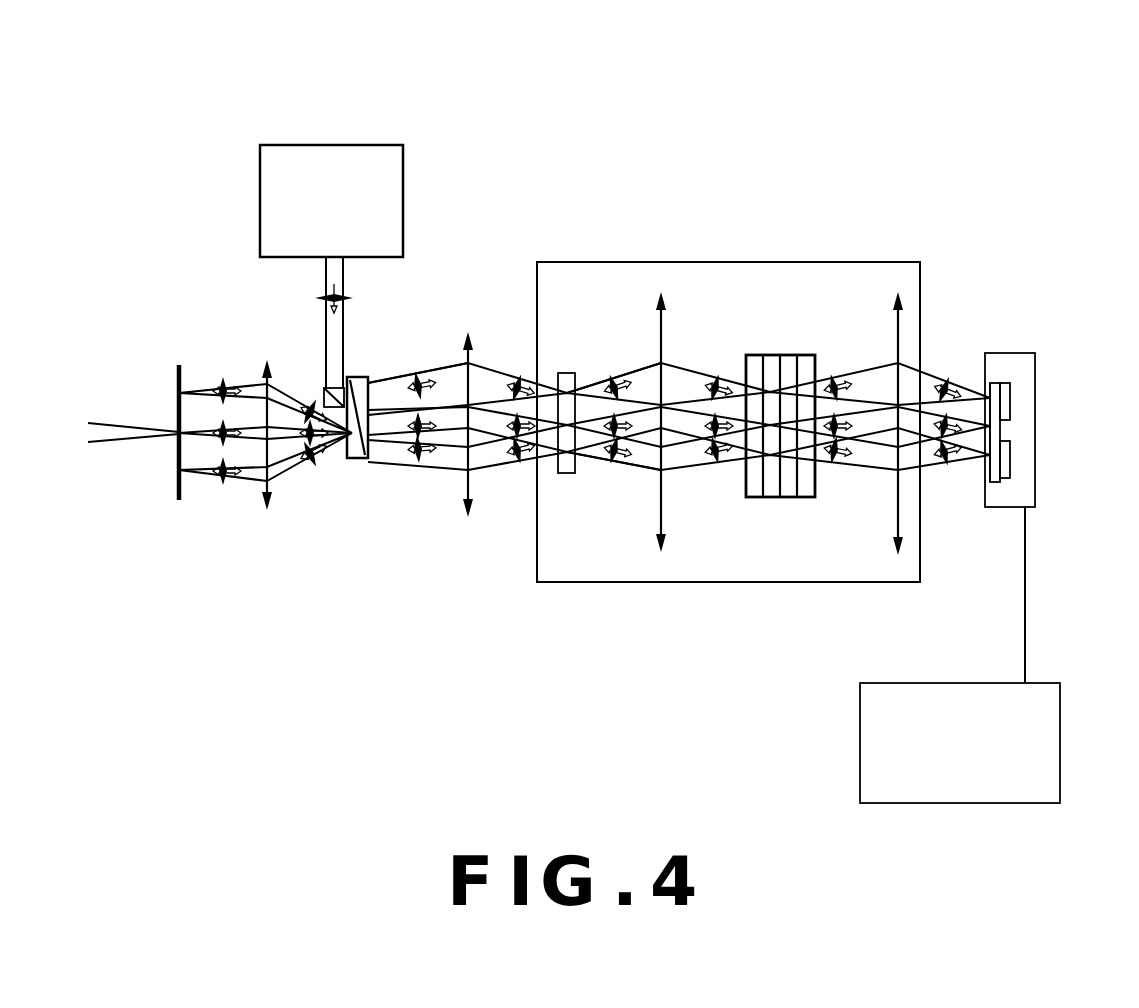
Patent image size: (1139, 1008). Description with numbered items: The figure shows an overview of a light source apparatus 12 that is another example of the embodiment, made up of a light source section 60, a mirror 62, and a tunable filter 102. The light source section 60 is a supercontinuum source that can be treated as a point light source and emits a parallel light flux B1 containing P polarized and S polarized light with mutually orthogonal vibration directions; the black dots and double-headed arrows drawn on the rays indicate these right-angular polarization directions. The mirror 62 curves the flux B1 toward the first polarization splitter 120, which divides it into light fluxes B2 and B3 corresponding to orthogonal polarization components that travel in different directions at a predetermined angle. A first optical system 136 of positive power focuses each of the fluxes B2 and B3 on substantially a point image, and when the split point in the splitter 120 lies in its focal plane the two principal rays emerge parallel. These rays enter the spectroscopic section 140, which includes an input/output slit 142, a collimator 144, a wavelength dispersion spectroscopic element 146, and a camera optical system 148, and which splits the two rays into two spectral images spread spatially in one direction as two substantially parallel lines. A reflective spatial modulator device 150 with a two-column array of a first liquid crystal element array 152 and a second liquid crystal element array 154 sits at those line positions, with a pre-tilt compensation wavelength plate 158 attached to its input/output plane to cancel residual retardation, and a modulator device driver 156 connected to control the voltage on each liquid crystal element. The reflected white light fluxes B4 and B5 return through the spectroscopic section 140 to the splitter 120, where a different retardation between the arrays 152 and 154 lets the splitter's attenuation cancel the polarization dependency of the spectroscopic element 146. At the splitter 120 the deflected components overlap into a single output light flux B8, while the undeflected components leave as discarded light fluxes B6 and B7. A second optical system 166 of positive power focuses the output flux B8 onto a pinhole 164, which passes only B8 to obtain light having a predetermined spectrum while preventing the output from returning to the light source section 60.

The light source apparatus 12 is at (492, 46).
The light source section 60 is at (331, 182).
The mirror 62 is at (323, 388).
The tunable filter 102 is at (787, 156).
The first polarization splitter 120 is at (355, 460).
The first optical system 136 is at (468, 345).
The spectroscopic section 140 is at (846, 262).
The input/output slit 142 is at (567, 373).
The collimator 144 is at (661, 550).
The wavelength dispersion spectroscopic element 146 is at (775, 355).
The camera optical system 148 is at (898, 552).
The reflective spatial modulator device 150 is at (1030, 508).
The first liquid crystal element array 152 is at (1012, 390).
The second liquid crystal element array 154 is at (1005, 480).
The modulator device driver 156 is at (975, 655).
The pre-tilt compensation wavelength plate 158 is at (985, 487).
The pinhole 164 is at (180, 500).
The second optical system 166 is at (268, 500).
The parallel light flux B1 is at (322, 306).
The light flux B2 is at (438, 376).
The light flux B3 is at (398, 400).
The white light flux B4 is at (612, 392).
The white light flux B5 is at (605, 462).
The discarded light flux B6 is at (193, 390).
The discarded light flux B7 is at (243, 478).
The output light flux B8 is at (100, 448).